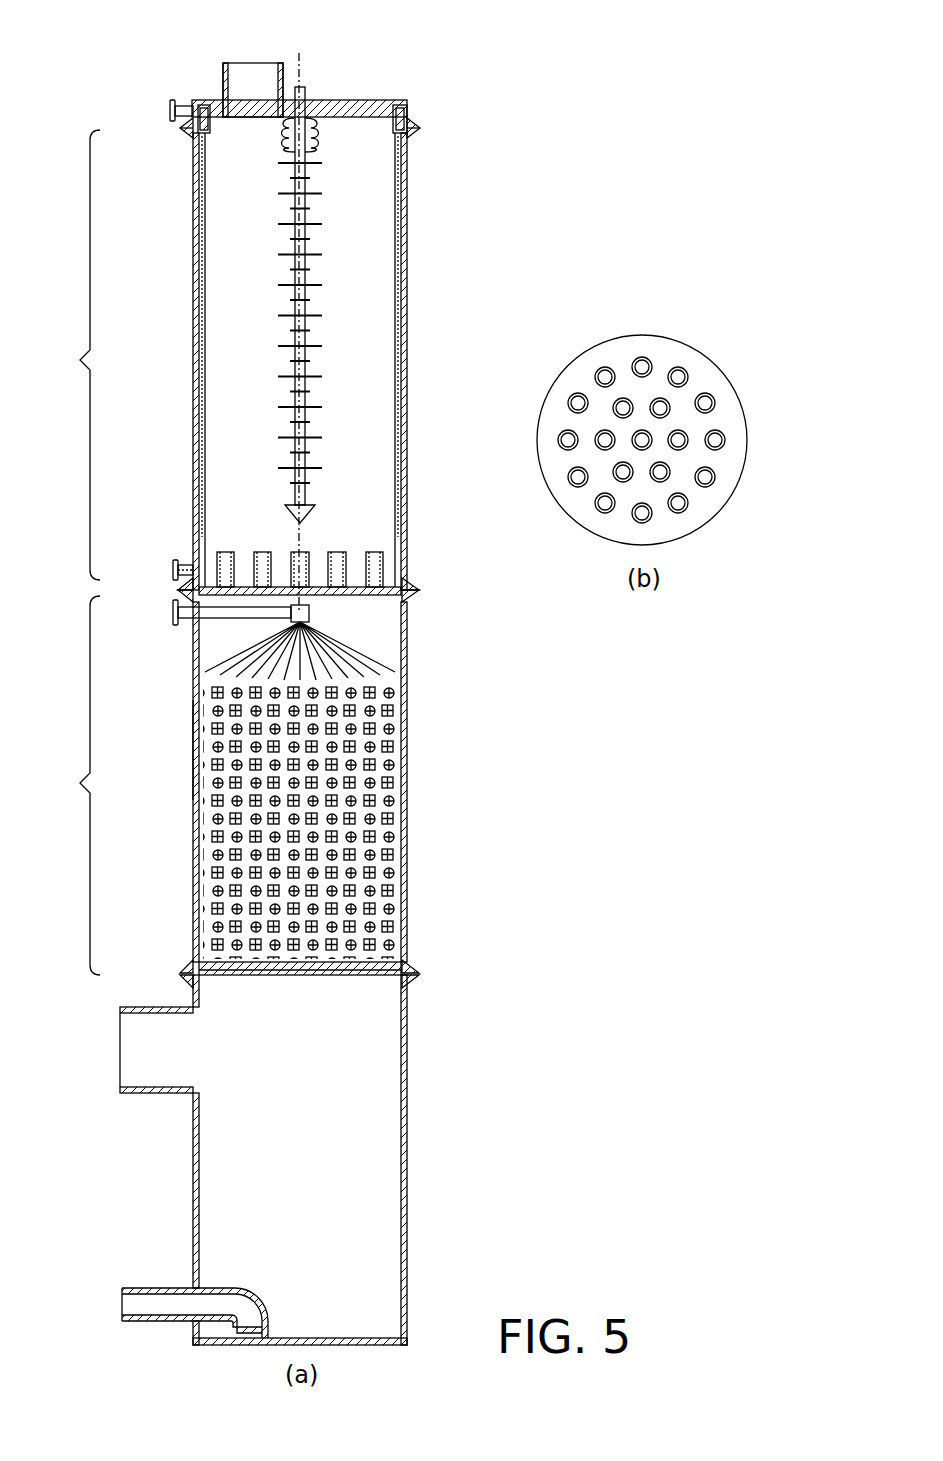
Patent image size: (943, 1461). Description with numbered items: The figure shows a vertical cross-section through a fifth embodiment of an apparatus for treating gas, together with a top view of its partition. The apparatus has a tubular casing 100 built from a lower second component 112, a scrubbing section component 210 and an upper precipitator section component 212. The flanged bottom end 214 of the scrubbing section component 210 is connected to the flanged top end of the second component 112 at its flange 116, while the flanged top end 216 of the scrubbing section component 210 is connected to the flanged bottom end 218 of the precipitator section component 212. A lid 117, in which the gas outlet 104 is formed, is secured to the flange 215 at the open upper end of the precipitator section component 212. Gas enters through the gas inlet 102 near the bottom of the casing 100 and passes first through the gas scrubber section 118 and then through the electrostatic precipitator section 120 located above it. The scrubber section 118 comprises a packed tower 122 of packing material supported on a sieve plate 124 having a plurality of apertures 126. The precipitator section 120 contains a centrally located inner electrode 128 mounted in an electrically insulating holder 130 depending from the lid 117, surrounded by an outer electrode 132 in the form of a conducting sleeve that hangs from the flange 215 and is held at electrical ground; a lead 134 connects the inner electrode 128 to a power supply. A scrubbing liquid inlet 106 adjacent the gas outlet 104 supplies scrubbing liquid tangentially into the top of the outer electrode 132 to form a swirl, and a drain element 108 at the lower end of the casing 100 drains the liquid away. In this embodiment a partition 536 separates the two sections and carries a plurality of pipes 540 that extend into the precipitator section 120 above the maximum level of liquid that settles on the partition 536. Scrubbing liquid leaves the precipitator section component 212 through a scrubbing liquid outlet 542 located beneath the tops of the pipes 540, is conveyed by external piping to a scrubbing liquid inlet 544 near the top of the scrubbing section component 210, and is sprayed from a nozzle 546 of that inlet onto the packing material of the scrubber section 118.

The casing 100 is at (415, 857).
The gas inlet 102 is at (148, 1093).
The gas outlet 104 is at (222, 78).
The scrubbing liquid inlet 106 is at (172, 110).
The drain element 108 is at (148, 1288).
The second component 112 is at (407, 1100).
The flange 116 is at (418, 988).
The lid 117 is at (354, 100).
The gas scrubber section 118 is at (69, 785).
The electrostatic precipitator section 120 is at (69, 355).
The packed tower 122 is at (400, 780).
The sieve plate 124 is at (282, 977).
The apertures 126 is at (236, 977).
The inner electrode 128 is at (308, 264).
The electrically insulating holder 130 is at (312, 135).
The outer electrode 132 is at (206, 300).
The lead 134 is at (296, 62).
The scrubbing section component 210 is at (193, 742).
The precipitator section component 212 is at (193, 250).
The flanged bottom end 214 is at (420, 960).
The flange 215 is at (420, 140).
The flanged top end 216 is at (420, 596).
The flanged bottom end 218 is at (420, 585).
The partition 536 is at (338, 583).
The pipes 540 is at (290, 558).
The scrubbing liquid outlet 542 is at (172, 567).
The scrubbing liquid inlet 544 is at (172, 618).
The nozzle 546 is at (312, 616).